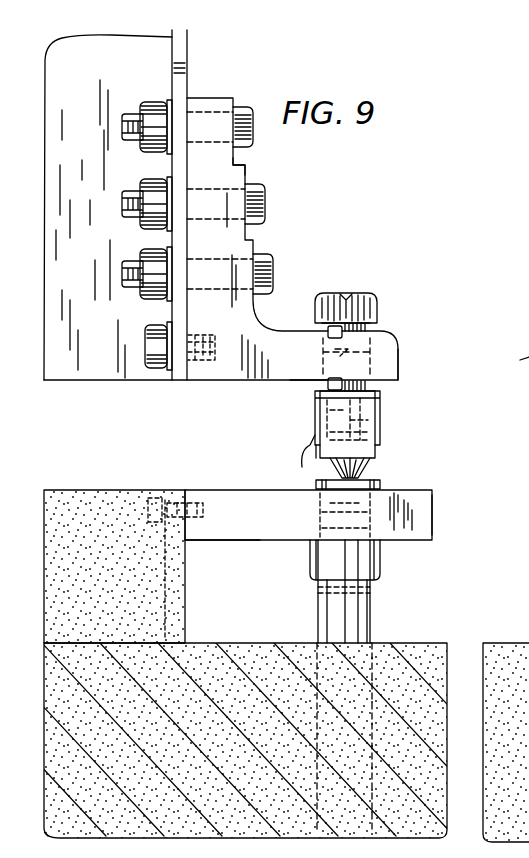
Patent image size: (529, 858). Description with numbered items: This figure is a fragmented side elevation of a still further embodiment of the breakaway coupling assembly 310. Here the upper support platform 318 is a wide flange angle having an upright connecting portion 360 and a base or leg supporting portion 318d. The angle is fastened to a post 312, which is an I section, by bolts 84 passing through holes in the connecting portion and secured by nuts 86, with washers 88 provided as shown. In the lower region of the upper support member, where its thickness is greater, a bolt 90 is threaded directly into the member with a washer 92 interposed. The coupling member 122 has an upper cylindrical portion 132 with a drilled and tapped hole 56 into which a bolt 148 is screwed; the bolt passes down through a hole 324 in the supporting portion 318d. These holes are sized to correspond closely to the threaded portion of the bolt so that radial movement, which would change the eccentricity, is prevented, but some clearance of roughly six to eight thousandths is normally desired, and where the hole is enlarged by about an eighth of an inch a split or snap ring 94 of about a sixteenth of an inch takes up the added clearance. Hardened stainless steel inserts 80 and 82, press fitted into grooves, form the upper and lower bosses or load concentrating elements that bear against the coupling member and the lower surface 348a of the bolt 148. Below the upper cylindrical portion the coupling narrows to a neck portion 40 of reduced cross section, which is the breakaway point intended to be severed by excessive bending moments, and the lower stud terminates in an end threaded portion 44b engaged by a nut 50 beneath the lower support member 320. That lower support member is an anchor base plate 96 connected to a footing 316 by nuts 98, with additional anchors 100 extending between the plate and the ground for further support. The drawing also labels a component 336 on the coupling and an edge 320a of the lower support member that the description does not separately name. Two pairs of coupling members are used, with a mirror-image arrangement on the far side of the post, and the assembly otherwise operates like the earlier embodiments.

The post 312 is at (188, 44).
The washers 88 is at (168, 101).
The nuts 86 is at (152, 108).
The bolts 84 is at (248, 128).
The upright connecting portion 360 is at (237, 178).
The upper support platform 318 is at (318, 197).
The coupling assembly 310 is at (428, 258).
The bolt 148 is at (372, 293).
The lower surface of bolt 348a is at (377, 327).
The upper insert 80 is at (314, 333).
The split or snap ring 94 is at (325, 357).
The supporting portion 318d is at (402, 363).
The holes 324 is at (313, 378).
The nozzle holder 336 is at (377, 390).
The lower insert 82 is at (327, 387).
The drilled and tapped hole 56 is at (377, 432).
The breakaway coupling member 122 is at (292, 452).
The upper cylindrical portion 132 is at (291, 463).
The neck portion 40 is at (364, 478).
The lower support member 320 is at (436, 498).
The plate edge 320a is at (424, 520).
The nut 50 is at (380, 557).
The end threaded portion 44b is at (370, 597).
The additional anchors 100 is at (327, 620).
The nuts 98 is at (159, 494).
The anchor base plate 96 is at (225, 528).
The footing 316 is at (185, 612).
The washer 92 is at (150, 325).
The bolt 90 is at (155, 365).